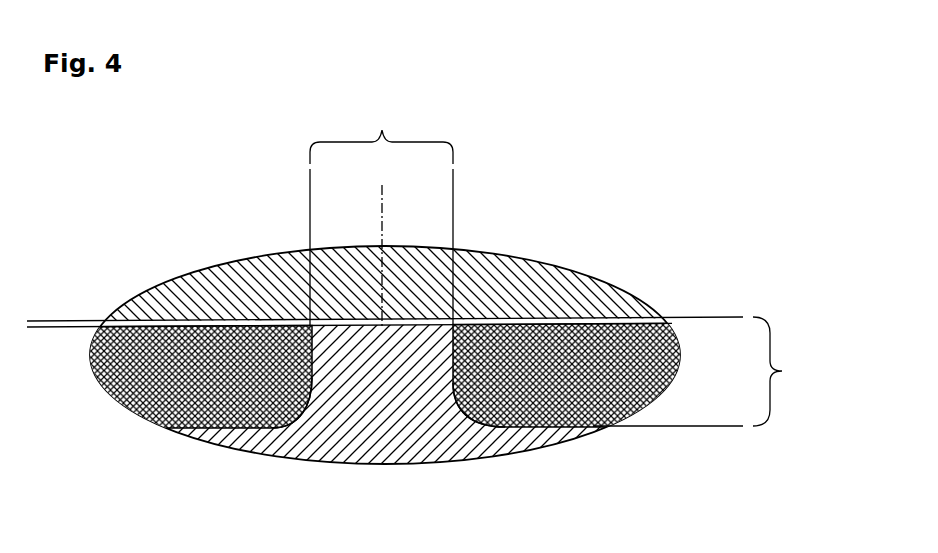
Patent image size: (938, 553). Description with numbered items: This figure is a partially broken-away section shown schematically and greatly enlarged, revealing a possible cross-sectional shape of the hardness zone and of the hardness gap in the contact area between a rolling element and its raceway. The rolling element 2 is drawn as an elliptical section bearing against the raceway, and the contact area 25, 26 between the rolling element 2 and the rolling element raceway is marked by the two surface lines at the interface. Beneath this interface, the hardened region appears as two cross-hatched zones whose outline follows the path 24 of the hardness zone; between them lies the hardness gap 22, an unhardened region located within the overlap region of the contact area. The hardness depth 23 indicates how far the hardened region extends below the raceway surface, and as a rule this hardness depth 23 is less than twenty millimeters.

The rolling element 2 is at (536, 262).
The hardness gap 22 is at (382, 130).
The hardness depth 23 is at (782, 371).
The path of the hardness zone 24 is at (288, 428).
The contact area 25 is at (62, 302).
The contact area 26 is at (45, 348).